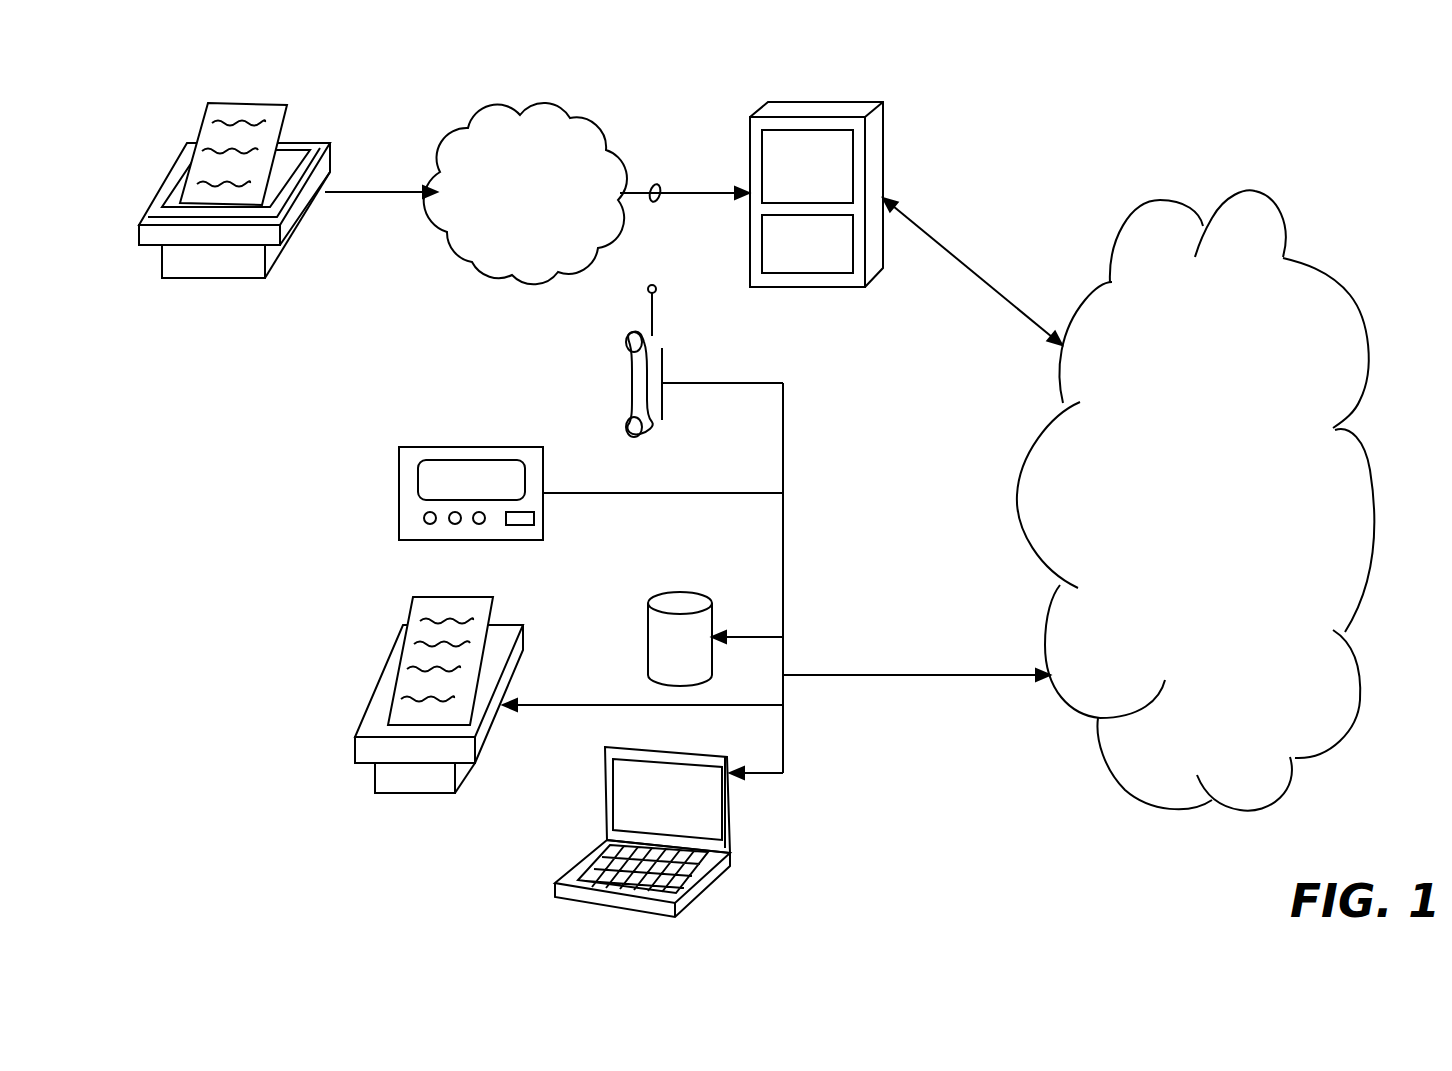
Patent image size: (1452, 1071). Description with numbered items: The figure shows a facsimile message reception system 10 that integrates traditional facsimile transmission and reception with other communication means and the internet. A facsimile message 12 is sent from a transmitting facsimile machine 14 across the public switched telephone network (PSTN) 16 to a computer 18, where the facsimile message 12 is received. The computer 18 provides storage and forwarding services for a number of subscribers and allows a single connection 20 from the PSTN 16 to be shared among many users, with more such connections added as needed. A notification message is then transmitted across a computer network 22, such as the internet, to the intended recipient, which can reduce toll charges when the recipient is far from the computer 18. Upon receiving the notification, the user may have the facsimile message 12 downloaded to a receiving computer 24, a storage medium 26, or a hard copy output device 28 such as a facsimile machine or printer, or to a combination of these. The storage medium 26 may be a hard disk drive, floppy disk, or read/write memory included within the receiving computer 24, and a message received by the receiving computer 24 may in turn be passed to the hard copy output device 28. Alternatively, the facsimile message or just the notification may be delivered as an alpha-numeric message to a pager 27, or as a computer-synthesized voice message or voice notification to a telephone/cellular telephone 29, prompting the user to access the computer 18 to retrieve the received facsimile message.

The facsimile message reception system 10 is at (1145, 156).
The facsimile message 12 is at (273, 113).
The transmitting facsimile machine 14 is at (330, 152).
The public switched telephone network (PSTN) 16 is at (525, 193).
The computer 18 is at (880, 140).
The connection 20 is at (661, 186).
The computer network 22 is at (1196, 500).
The receiving computer 24 is at (730, 795).
The storage medium 26 is at (676, 610).
The pager 27 is at (525, 541).
The hard copy output device 28 is at (389, 696).
The telephone/cellular telephone 29 is at (662, 418).